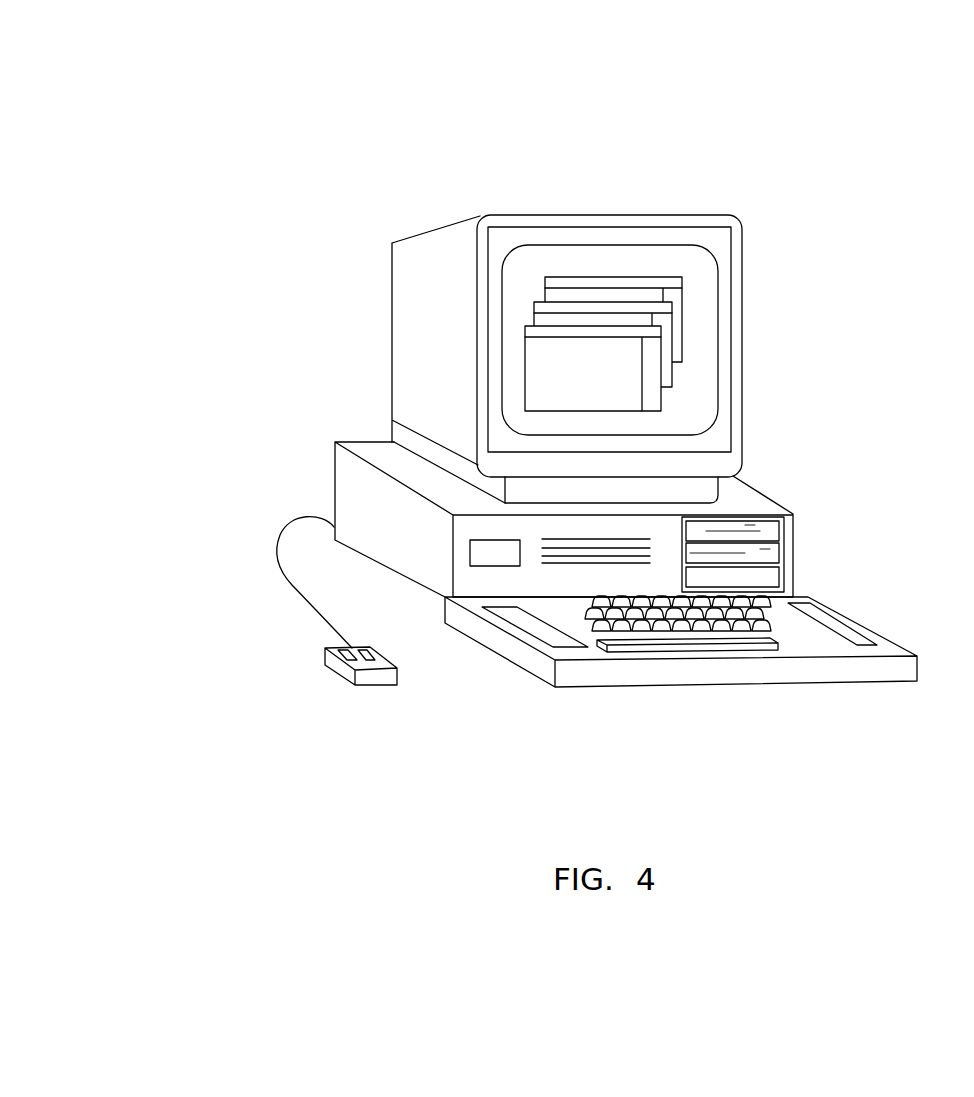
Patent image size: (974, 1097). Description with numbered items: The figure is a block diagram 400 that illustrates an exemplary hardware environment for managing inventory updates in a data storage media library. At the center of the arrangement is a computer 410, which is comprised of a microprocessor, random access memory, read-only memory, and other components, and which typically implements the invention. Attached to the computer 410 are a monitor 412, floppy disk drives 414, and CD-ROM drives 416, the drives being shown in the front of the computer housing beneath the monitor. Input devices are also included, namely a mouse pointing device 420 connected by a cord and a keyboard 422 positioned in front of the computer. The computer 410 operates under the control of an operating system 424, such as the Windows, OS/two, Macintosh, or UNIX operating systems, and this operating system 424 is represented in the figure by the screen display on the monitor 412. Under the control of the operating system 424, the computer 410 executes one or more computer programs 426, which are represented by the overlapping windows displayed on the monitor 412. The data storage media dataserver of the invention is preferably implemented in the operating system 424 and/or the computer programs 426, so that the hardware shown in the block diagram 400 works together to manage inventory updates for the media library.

The block diagram 400 is at (760, 162).
The computer 410 is at (760, 495).
The monitor 412 is at (633, 216).
The floppy disk drives 414 is at (777, 550).
The CD-ROM drives 416 is at (777, 578).
The mouse pointing device 420 is at (325, 667).
The keyboard 422 is at (848, 672).
The operating system 424 is at (527, 265).
The computer programs 426 is at (700, 354).